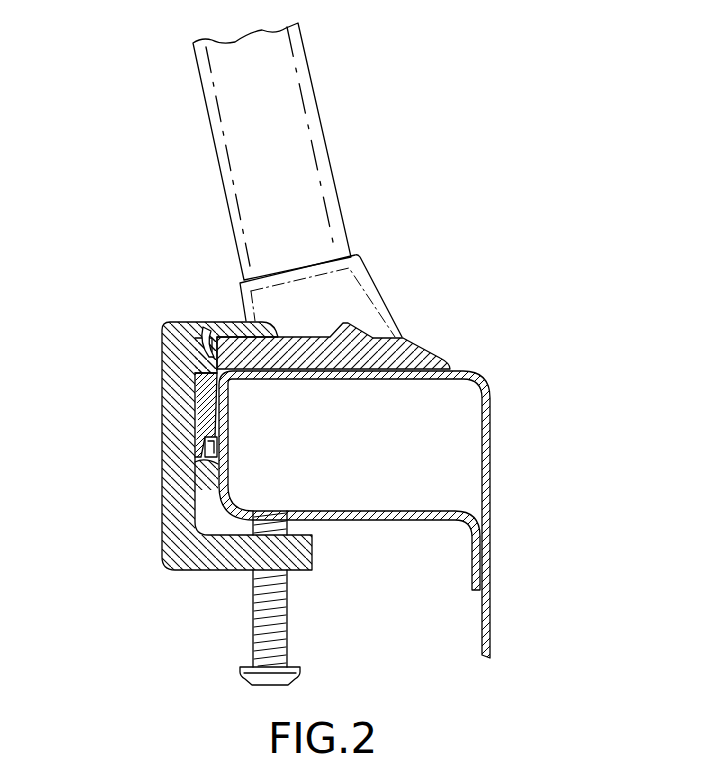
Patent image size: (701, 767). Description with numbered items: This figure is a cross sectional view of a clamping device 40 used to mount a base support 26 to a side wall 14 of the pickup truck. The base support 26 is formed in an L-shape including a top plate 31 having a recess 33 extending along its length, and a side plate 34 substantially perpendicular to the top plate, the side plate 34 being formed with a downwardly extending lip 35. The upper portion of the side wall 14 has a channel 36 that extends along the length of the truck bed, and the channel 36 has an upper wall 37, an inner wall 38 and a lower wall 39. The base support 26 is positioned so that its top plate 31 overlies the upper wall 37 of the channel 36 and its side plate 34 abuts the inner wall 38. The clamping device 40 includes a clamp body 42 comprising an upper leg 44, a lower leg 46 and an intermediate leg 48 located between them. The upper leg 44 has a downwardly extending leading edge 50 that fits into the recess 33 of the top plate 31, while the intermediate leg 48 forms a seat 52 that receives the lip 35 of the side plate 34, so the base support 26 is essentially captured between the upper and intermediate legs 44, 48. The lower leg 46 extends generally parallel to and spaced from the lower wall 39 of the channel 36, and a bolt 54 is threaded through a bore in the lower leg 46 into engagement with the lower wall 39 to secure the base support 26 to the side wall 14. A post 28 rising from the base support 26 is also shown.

The side wall 14 is at (415, 514).
The base support 26 is at (393, 312).
The post / tube 28 is at (320, 113).
The top plate 31 is at (407, 338).
The recess 33 is at (197, 368).
The side plate 34 is at (202, 415).
The lip 35 is at (198, 447).
The channel 36 is at (415, 514).
The upper wall 37 is at (337, 380).
The inner wall 38 is at (230, 462).
The lower wall 39 is at (362, 508).
The clamping device 40 is at (124, 323).
The clamp body 42 is at (174, 443).
The upper leg 44 is at (222, 320).
The lower leg 46 is at (228, 572).
The intermediate leg 48 is at (210, 452).
The leading edge 50 is at (212, 340).
The seat 52 is at (193, 477).
The bolt 54 is at (287, 620).